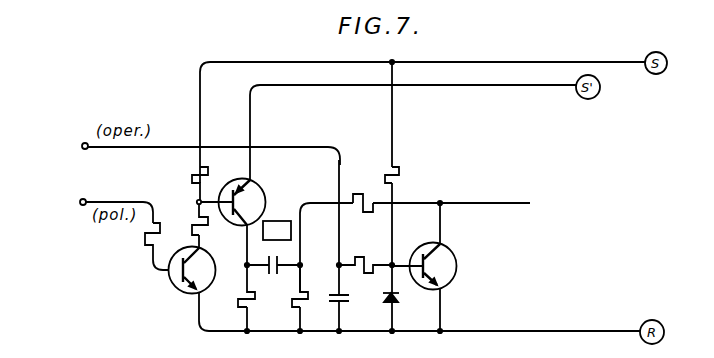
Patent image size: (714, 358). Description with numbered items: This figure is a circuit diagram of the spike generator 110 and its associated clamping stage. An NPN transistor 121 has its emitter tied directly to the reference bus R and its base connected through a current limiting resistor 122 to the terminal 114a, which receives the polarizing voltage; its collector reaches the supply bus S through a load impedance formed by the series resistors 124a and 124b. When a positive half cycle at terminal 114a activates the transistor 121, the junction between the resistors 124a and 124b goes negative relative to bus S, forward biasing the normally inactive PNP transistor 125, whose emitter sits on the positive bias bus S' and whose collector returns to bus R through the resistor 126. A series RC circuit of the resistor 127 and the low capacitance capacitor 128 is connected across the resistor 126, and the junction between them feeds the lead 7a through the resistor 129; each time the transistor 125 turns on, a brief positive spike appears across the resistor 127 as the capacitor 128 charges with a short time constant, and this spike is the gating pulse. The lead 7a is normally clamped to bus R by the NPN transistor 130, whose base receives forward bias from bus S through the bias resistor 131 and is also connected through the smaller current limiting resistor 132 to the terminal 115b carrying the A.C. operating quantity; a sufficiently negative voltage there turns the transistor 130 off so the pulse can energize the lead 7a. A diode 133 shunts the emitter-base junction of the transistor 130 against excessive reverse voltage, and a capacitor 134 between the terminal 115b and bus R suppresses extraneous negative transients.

The lead 7a is at (500, 202).
The spike generator 110 is at (277, 230).
The terminal 114a is at (80, 206).
The terminal 115b is at (83, 144).
The NPN transistor 121 is at (176, 292).
The current limiting resistor 122 is at (143, 240).
The resistor 124a is at (192, 226).
The resistor 124b is at (195, 174).
The PNP transistor 125 is at (262, 187).
The resistor 126 is at (237, 297).
The resistor 127 is at (303, 295).
The capacitor 128 is at (273, 279).
The resistor 129 is at (362, 195).
The NPN transistor 130 is at (458, 262).
The bias resistor 131 is at (398, 174).
The current limiting resistor 132 is at (360, 257).
The diode 133 is at (397, 296).
The capacitor 134 is at (349, 297).